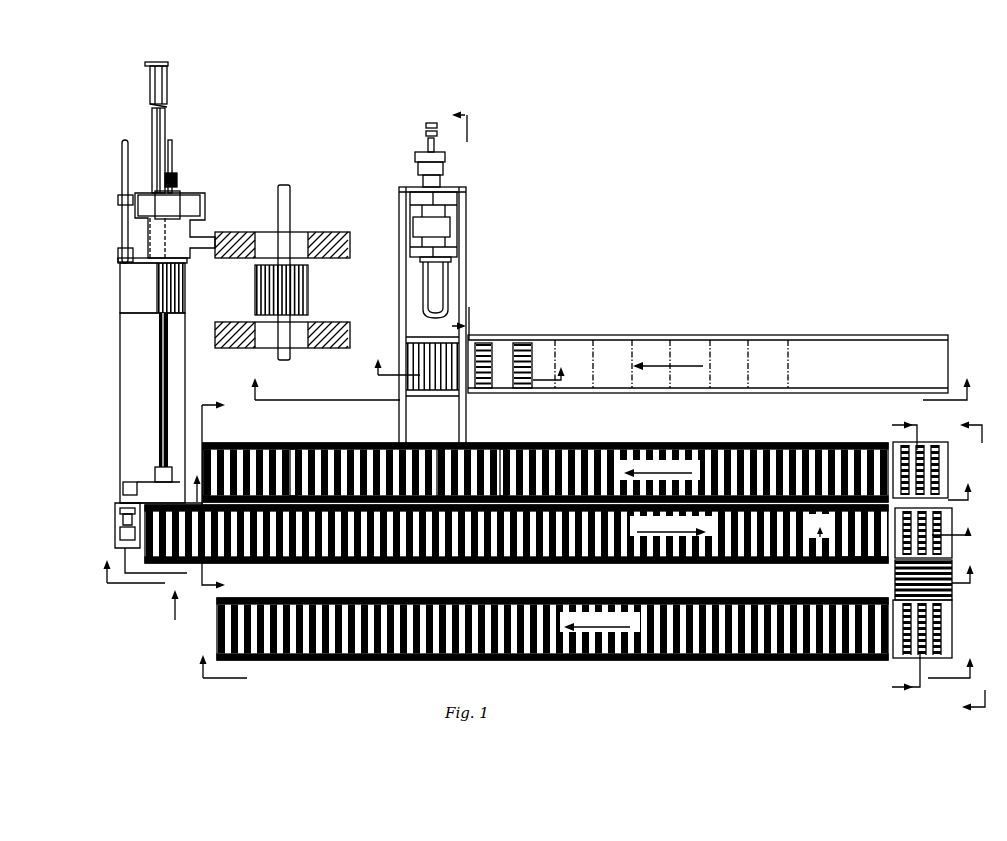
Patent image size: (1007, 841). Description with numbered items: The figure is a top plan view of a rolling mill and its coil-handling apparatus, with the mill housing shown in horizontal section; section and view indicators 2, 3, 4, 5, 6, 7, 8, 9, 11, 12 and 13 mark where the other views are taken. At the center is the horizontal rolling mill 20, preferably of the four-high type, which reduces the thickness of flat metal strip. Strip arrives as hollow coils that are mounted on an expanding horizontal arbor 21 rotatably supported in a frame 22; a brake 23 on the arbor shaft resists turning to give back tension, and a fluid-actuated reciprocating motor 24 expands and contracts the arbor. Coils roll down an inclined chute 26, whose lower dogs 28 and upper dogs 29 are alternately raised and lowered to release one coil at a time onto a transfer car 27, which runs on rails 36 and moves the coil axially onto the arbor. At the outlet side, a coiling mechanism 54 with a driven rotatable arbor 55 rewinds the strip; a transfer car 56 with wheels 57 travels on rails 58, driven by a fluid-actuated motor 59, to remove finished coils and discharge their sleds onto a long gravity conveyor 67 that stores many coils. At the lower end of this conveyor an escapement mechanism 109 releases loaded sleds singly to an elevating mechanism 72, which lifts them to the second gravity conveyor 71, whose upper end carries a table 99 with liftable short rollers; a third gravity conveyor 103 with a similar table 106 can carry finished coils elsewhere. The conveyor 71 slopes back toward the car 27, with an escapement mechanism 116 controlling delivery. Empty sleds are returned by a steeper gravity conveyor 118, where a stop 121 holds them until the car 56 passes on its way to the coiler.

The fluid-actuated motor 59 is at (160, 123).
The coiling mechanism 54 is at (157, 238).
The rotatable arbor 55 is at (172, 289).
The rails 58 is at (120, 410).
The transfer car 56 is at (150, 496).
The wheels 57 is at (125, 490).
The horizontal rolling mill 20 is at (298, 289).
The frame 22 is at (467, 226).
The brake 23 is at (415, 227).
The fluid-actuated reciprocating motor 24 is at (443, 164).
The horizontal arbor 21 is at (452, 286).
The rails 36 is at (459, 416).
The inclined chute 26 is at (797, 340).
The dogs 28 is at (483, 343).
The dogs 29 is at (523, 343).
The second gravity conveyor 71 is at (757, 455).
The stop 121 is at (205, 456).
The gravity conveyor 118 is at (292, 452).
The transfer car 27 is at (440, 447).
The escapement mechanism 116 is at (505, 447).
The gravity conveyor 67 is at (445, 565).
The escapement mechanism 109 is at (851, 564).
The third gravity conveyor 103 is at (735, 662).
The table 99 is at (948, 458).
The elevating mechanism 72 is at (952, 549).
The table 106 is at (945, 622).
The section line 2- 2 is at (610, 381).
The section line 3- 3 is at (581, 480).
The section line 4- 4 is at (536, 563).
The section line 5- 5 is at (584, 658).
The section line 6- 6 is at (965, 567).
The section line 7- 7 is at (469, 361).
The section line 8- 8 is at (453, 223).
The section line 9- 9 is at (898, 557).
The section line 11- 11 is at (956, 523).
The view arrow 12 is at (173, 616).
The section line 13- 13 is at (225, 496).